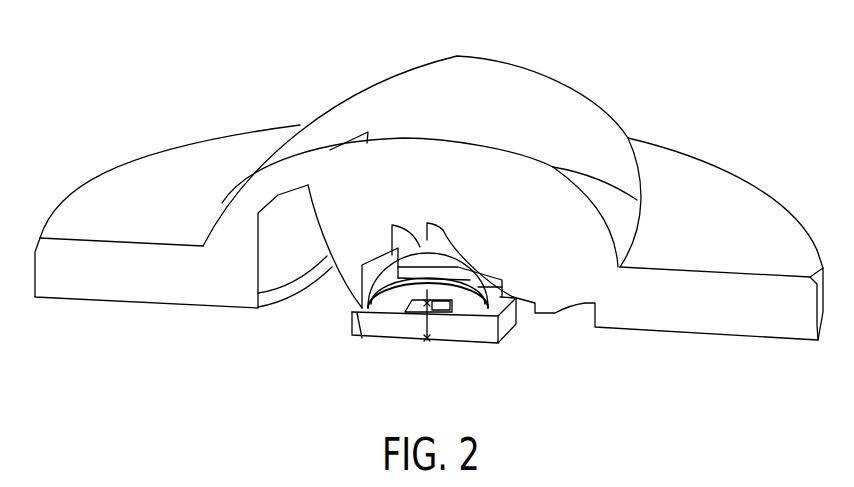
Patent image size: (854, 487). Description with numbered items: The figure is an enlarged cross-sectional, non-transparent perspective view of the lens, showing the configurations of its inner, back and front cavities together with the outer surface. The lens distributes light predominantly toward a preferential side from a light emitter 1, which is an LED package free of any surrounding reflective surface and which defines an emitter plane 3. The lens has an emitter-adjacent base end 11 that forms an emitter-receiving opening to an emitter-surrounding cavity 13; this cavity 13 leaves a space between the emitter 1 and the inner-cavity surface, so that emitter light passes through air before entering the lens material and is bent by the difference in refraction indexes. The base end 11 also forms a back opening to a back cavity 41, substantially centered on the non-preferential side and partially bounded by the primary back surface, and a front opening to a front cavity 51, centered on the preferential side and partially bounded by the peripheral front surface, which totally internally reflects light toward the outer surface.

The light emitter 1 is at (424, 304).
The emitter plane 3 is at (450, 308).
The emitter-adjacent base end 11 is at (350, 353).
The emitter-surrounding cavity 13 is at (445, 245).
The back cavity 41 is at (287, 232).
The front cavity 51 is at (578, 332).